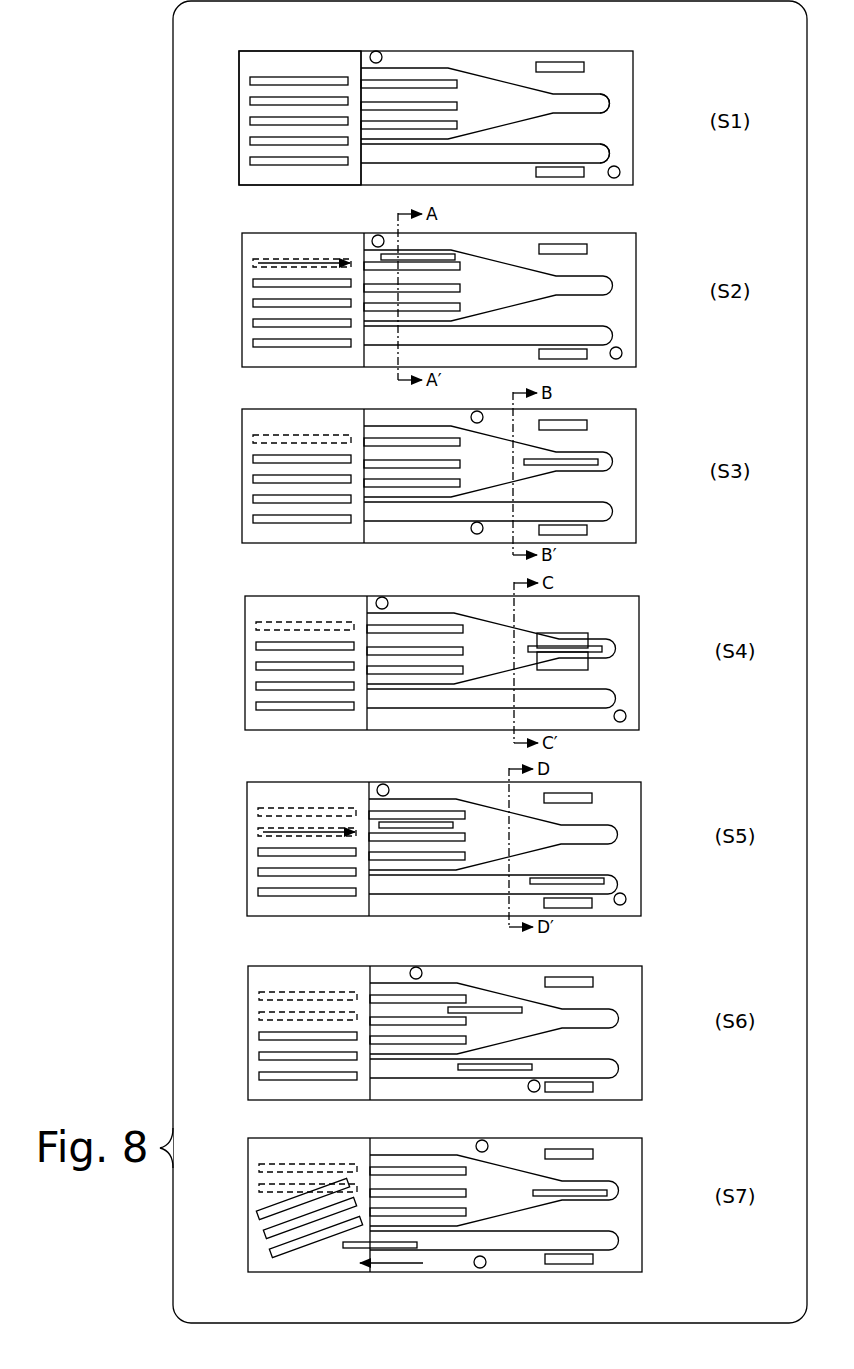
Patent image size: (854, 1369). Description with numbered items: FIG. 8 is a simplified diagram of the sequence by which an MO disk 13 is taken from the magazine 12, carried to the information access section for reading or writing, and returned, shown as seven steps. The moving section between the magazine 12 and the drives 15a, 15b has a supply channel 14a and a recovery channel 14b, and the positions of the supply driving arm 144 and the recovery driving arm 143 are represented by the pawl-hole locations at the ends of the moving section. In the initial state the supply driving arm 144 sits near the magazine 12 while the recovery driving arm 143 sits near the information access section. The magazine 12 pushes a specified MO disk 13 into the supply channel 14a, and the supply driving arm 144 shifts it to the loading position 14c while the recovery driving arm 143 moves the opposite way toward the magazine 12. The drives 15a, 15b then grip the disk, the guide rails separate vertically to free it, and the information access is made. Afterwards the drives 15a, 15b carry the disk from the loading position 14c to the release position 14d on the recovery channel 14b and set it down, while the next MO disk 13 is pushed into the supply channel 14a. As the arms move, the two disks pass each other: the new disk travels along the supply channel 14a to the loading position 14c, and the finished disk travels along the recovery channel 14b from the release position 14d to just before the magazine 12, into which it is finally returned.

The magazine 12 is at (290, 65).
The MO disk 13 is at (250, 101).
The supply channel 14a is at (440, 72).
The recovery channel 14b is at (498, 153).
The loading position 14c is at (598, 103).
The release position 14d is at (598, 153).
The drive 15a is at (557, 64).
The drive 15b is at (570, 178).
The recovery driving arm 143 is at (620, 172).
The supply driving arm 144 is at (376, 51).